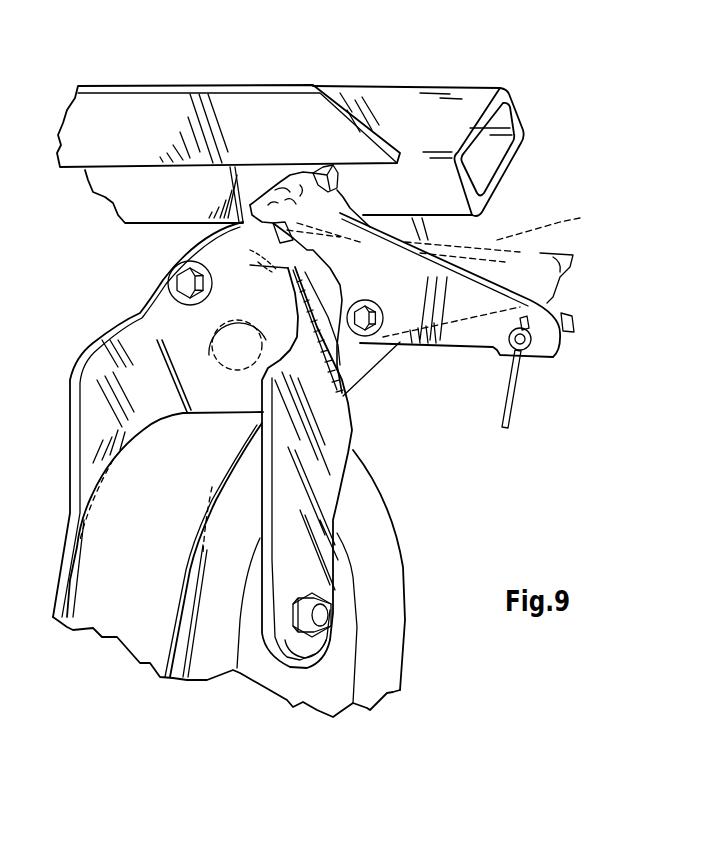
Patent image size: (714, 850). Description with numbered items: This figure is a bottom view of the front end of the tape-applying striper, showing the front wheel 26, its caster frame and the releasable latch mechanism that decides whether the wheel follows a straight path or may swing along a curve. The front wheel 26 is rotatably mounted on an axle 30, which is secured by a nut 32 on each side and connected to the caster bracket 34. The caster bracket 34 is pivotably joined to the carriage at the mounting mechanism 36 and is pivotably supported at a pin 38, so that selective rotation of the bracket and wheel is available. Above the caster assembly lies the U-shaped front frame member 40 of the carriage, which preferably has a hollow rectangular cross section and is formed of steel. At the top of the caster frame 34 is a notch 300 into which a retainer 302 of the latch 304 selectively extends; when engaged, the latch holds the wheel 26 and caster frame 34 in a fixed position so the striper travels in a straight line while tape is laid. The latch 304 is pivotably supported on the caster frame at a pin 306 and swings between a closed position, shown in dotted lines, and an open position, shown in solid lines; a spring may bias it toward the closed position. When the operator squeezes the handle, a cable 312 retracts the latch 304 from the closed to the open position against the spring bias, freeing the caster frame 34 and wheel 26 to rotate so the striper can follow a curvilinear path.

The front wheel 26 is at (347, 632).
The axle 30 is at (327, 613).
The nut 32 is at (317, 667).
The caster bracket 34 is at (322, 424).
The mounting mechanism 36 is at (273, 103).
The pin 38 is at (200, 340).
The front frame member 40 is at (403, 97).
The notch 300 is at (250, 250).
The retainer 302 is at (280, 262).
The latch 304 is at (498, 280).
The pin 306 is at (368, 368).
The cable 312 is at (505, 403).